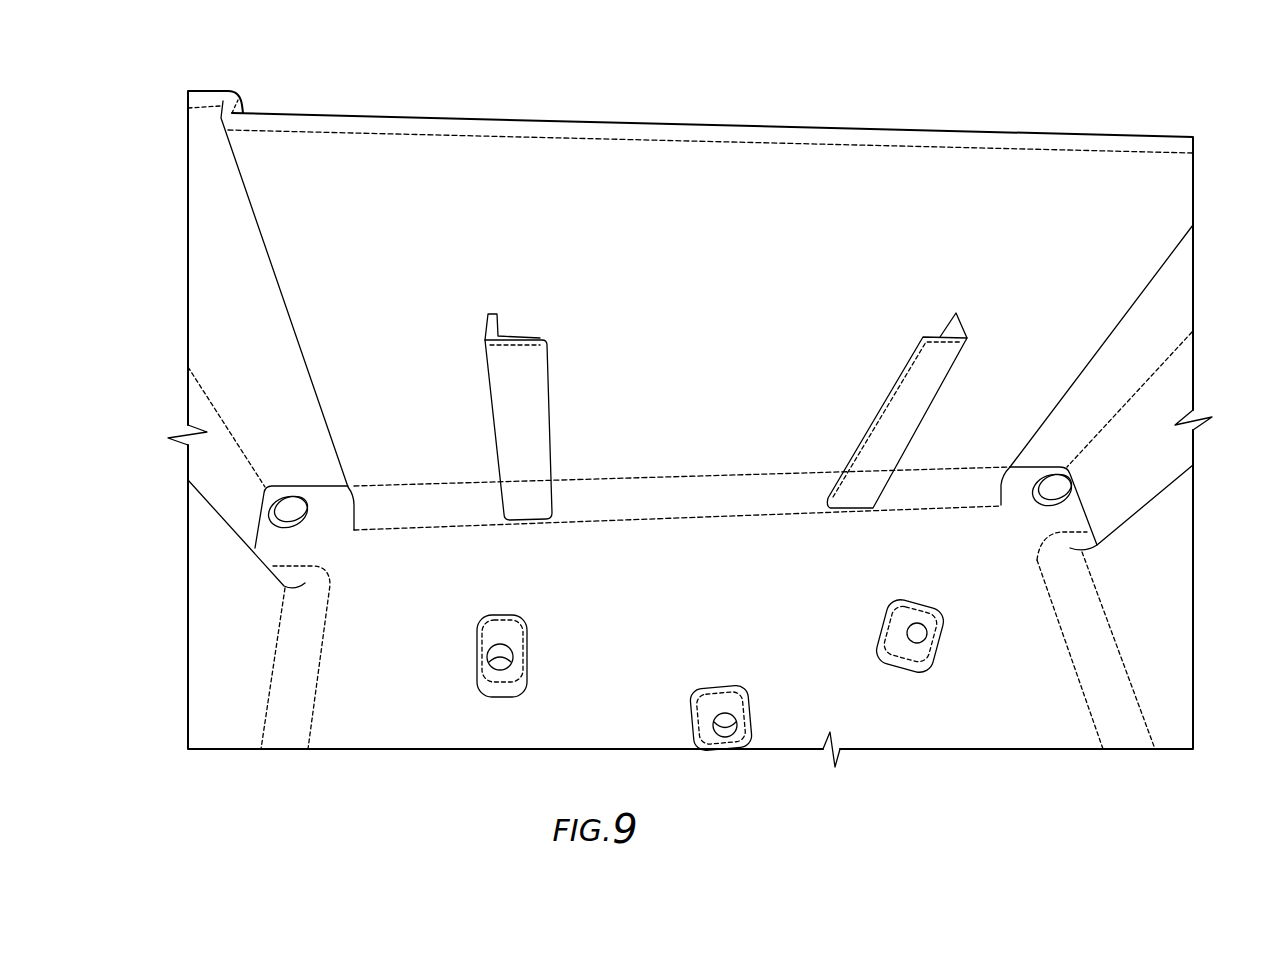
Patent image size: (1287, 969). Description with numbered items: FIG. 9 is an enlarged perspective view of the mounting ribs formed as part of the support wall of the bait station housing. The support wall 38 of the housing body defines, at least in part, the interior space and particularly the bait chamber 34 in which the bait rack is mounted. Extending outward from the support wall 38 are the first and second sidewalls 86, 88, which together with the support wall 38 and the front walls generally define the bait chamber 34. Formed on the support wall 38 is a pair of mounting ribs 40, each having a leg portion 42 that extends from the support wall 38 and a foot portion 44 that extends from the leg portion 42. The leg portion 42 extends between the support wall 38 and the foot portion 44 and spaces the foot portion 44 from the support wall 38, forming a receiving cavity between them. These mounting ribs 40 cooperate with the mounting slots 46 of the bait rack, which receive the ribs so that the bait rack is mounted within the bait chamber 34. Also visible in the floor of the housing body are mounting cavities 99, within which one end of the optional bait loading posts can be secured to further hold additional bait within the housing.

The bait chamber 34 is at (375, 692).
The support wall 38 is at (716, 210).
The mounting ribs 40 is at (530, 435).
The leg portion 42 is at (487, 326).
The foot portion 44 is at (533, 381).
The mounting slots 46 is at (522, 324).
The first sidewall 86 is at (200, 395).
The second sidewall 88 is at (1170, 393).
The mounting cavities 99 is at (505, 645).